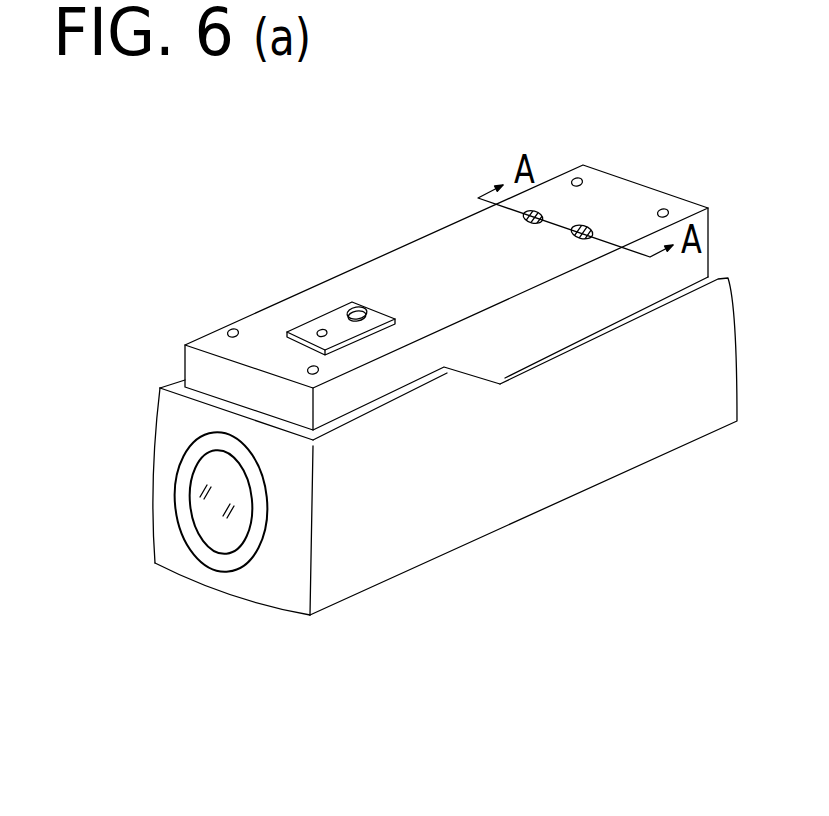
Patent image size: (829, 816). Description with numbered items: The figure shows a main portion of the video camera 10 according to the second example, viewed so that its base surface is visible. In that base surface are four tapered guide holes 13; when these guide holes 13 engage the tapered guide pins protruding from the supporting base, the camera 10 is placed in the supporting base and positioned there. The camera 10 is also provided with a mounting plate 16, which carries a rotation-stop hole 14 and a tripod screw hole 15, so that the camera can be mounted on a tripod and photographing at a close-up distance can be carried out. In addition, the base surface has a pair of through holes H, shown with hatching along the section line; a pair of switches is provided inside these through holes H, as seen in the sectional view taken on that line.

The camera 10 is at (527, 513).
The tapered guide holes 13 is at (230, 331).
The rotation-stop hole 14 is at (298, 346).
The tripod screw hole 15 is at (360, 305).
The mounting plate 16 is at (325, 305).
The through holes H is at (543, 214).